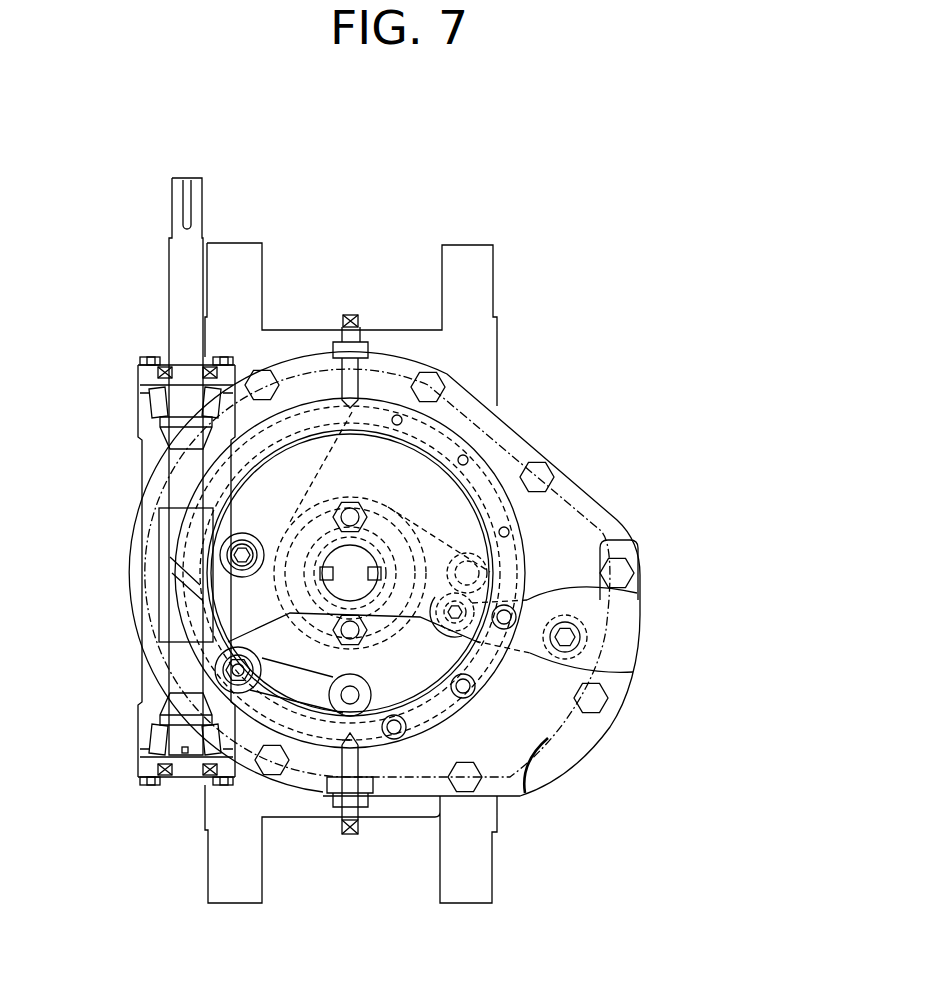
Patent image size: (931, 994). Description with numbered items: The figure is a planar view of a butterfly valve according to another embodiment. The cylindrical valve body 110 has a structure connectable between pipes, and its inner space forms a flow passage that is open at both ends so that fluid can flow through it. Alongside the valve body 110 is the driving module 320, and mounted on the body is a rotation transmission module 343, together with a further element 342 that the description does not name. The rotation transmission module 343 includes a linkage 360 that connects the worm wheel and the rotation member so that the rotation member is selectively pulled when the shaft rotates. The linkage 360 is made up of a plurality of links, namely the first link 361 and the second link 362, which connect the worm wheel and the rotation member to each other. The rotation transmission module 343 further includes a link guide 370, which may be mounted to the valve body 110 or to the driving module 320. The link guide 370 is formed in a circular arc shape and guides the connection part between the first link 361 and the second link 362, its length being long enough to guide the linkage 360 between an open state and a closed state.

The valve body 110 is at (485, 272).
The driving module 320 is at (128, 347).
The adjusting screw 342 is at (353, 347).
The rotation transmission module 343 is at (477, 724).
The linkage 360 is at (655, 645).
The first link 361 is at (639, 659).
The second link 362 is at (637, 594).
The link guide 370 is at (566, 721).